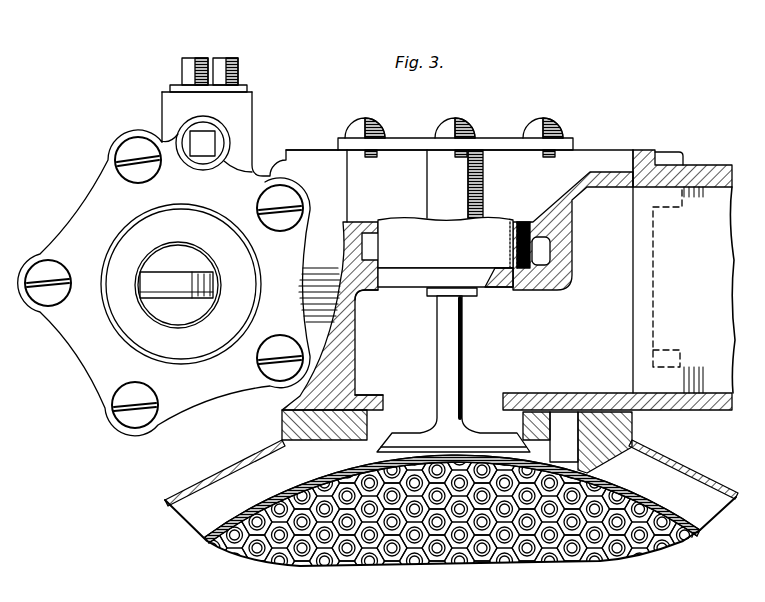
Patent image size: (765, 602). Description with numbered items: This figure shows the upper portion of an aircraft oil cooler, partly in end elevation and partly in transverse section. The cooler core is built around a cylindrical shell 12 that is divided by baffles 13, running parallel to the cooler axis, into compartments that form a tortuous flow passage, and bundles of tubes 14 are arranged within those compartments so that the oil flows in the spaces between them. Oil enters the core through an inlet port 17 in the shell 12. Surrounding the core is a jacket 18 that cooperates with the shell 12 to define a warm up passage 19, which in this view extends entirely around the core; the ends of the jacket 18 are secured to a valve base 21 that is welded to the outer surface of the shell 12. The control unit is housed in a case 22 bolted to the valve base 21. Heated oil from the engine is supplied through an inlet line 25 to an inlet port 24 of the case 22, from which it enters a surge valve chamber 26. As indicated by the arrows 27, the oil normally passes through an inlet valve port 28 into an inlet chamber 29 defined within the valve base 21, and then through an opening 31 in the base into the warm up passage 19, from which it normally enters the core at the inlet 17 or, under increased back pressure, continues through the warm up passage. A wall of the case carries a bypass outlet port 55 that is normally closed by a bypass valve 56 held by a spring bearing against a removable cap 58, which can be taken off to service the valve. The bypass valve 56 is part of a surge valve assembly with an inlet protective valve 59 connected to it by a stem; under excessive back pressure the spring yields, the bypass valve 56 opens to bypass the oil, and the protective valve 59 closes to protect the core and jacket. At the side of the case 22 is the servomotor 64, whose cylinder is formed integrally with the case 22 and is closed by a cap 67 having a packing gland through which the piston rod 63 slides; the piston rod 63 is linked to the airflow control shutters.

The cylindrical shell 12 is at (698, 521).
The baffles 13 is at (560, 547).
The tubes 14 is at (505, 550).
The inlet port 17 is at (207, 523).
The jacket 18 is at (185, 483).
The warm up passage 19 is at (233, 472).
The valve base 21 is at (657, 470).
The case 22 is at (582, 162).
The inlet port 24 is at (602, 290).
The inlet line 25 is at (720, 164).
The surge valve chamber 26 is at (463, 342).
The arrows 27 is at (219, 509).
The inlet valve port 28 is at (523, 400).
The inlet chamber 29 is at (567, 455).
The opening 31 is at (457, 441).
The bypass outlet port 55 is at (520, 290).
The bypass valve 56 is at (454, 242).
The cap 58 is at (490, 125).
The inlet protective valve 59 is at (389, 426).
The piston rod 63 is at (190, 308).
The servomotor 64 is at (88, 352).
The cap 67 is at (86, 197).